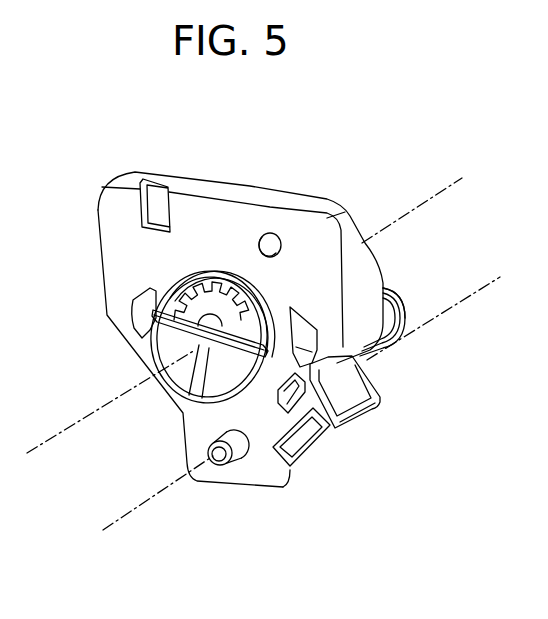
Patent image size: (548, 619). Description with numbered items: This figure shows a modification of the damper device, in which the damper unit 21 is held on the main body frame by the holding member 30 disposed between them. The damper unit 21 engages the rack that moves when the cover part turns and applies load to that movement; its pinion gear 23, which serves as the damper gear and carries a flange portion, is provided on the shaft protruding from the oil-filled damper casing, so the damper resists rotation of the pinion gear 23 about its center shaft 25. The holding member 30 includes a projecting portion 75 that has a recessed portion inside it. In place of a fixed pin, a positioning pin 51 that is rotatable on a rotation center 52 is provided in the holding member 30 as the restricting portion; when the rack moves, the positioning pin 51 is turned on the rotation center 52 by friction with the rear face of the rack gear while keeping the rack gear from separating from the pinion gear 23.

The damper unit 21 is at (378, 357).
The pinion gear 23 is at (187, 289).
The center shaft 25 is at (130, 388).
The holding member 30 is at (303, 283).
The positioning pin 51 is at (210, 453).
The rotation center 52 is at (157, 493).
The projecting portion 75 is at (250, 397).